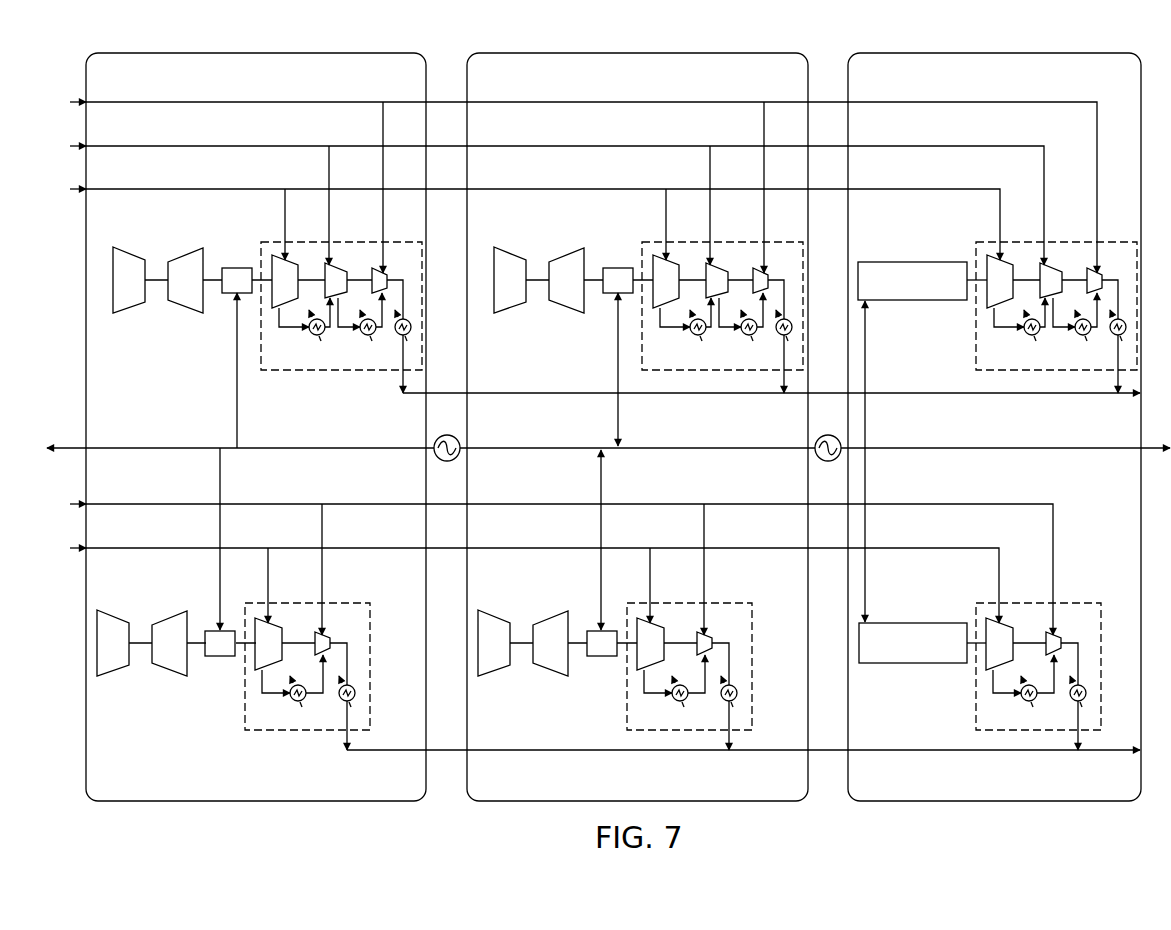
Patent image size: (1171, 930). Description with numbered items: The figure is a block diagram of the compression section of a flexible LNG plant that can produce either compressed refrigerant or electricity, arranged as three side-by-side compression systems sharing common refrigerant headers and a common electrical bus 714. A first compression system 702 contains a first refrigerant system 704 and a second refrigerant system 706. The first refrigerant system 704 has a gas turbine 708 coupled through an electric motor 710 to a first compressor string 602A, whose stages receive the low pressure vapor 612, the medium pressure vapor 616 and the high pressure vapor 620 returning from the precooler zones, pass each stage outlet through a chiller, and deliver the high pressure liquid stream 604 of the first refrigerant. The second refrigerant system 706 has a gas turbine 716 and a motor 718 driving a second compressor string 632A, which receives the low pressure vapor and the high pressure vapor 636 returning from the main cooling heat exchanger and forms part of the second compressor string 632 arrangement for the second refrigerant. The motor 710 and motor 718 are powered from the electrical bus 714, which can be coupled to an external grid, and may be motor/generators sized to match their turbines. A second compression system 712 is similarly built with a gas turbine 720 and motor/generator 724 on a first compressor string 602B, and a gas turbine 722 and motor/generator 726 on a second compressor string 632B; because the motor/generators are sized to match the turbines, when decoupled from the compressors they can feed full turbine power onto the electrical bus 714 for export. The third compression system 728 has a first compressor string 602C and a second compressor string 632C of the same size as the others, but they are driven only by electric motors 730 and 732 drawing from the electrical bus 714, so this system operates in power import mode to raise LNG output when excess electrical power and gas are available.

The first compression system 702 is at (323, 53).
The second compression system 712 is at (707, 53).
The third compression system 728 is at (1055, 53).
The high pressure vapor 620 is at (127, 102).
The medium pressure vapor 616 is at (127, 146).
The low pressure vapor 612 is at (127, 189).
The high pressure vapor 636 is at (127, 504).
The second compressor string 632 is at (127, 548).
The first refrigerant system 704 is at (262, 222).
The second refrigerant system 706 is at (283, 736).
The gas turbine 708 is at (132, 312).
The electric motor 710 is at (236, 268).
The electrical bus 714 is at (334, 447).
The gas turbine 716 is at (117, 666).
The motor 718 is at (223, 657).
The gas turbine 720 is at (566, 313).
The gas turbine 722 is at (551, 675).
The motor/generator 724 is at (618, 267).
The motor/generator 726 is at (603, 657).
The electric motor 730 is at (910, 261).
The electric motor 732 is at (910, 622).
The high pressure liquid stream 604 is at (932, 395).
The first compressor string 602A is at (349, 242).
The first compressor string 602B is at (731, 242).
The first compressor string 602C is at (1065, 242).
The second compressor string 632A is at (343, 603).
The second compressor string 632B is at (723, 604).
The second compressor string 632C is at (1073, 604).